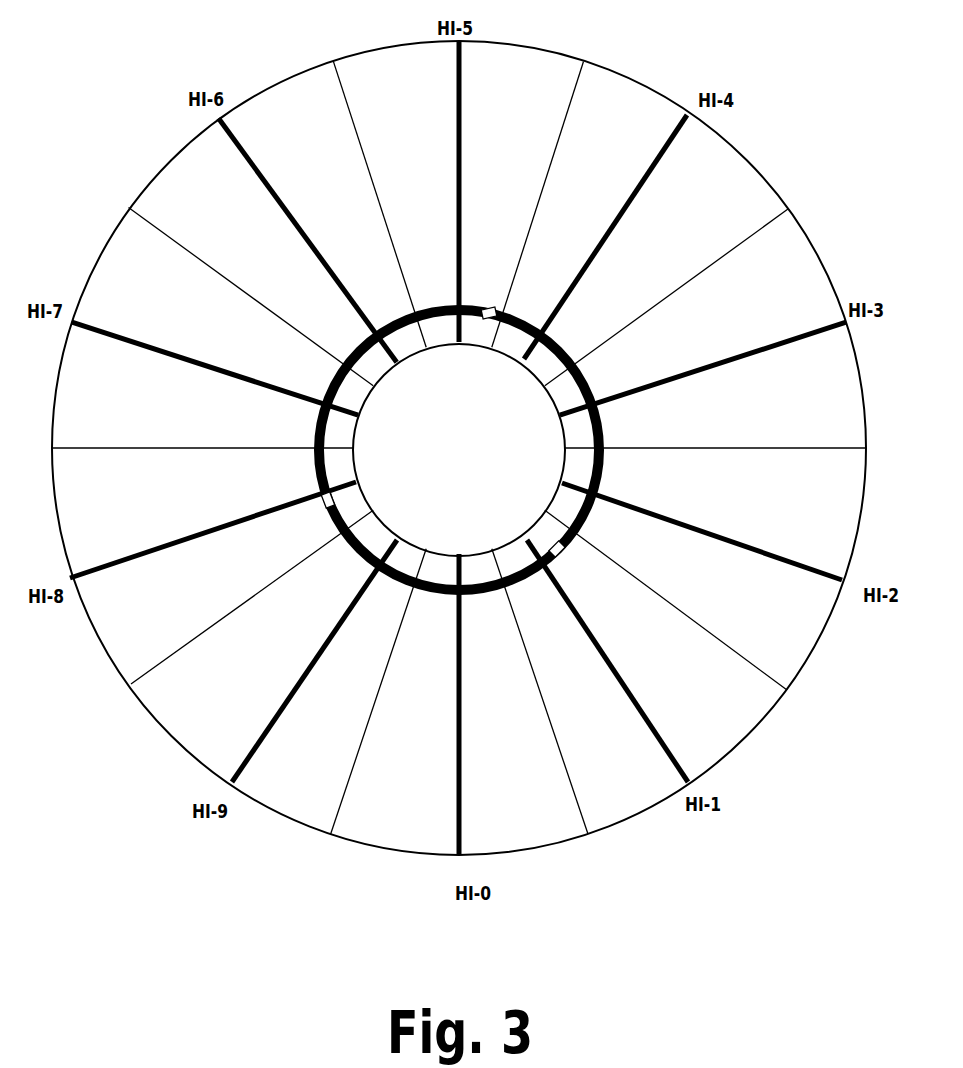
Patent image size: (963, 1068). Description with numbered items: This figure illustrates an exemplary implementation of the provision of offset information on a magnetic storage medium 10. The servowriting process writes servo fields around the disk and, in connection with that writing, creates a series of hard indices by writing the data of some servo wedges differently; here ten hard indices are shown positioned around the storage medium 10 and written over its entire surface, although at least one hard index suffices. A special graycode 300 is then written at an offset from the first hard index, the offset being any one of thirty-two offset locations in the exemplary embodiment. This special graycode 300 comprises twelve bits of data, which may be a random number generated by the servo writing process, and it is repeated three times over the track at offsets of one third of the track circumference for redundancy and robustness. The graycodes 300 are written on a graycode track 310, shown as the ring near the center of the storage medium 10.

The storage medium 10 is at (160, 726).
The special graycode 300 is at (489, 307).
The graycode track 310 is at (563, 350).